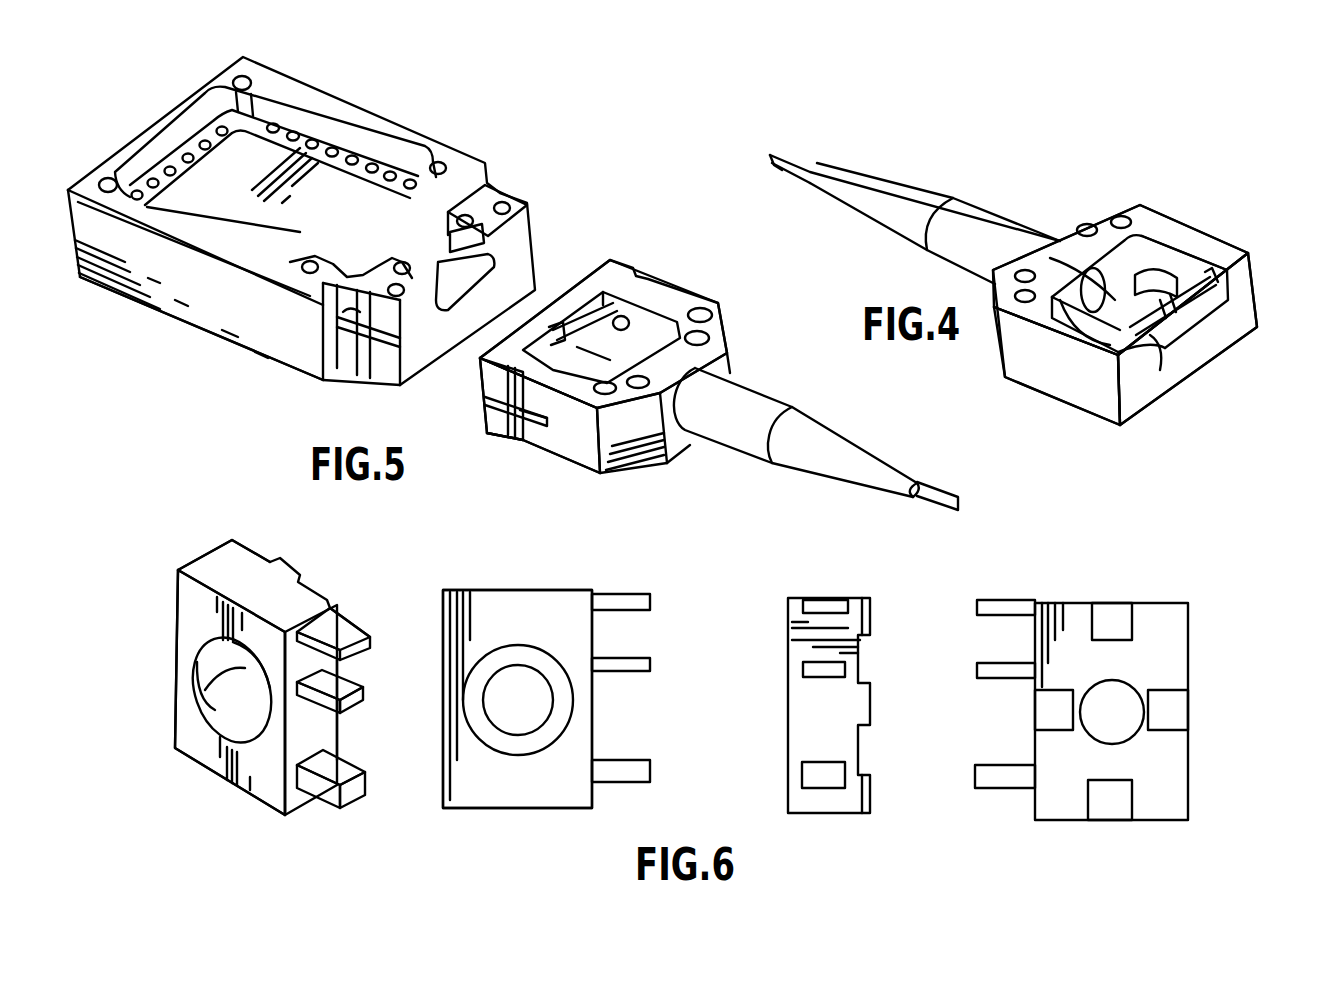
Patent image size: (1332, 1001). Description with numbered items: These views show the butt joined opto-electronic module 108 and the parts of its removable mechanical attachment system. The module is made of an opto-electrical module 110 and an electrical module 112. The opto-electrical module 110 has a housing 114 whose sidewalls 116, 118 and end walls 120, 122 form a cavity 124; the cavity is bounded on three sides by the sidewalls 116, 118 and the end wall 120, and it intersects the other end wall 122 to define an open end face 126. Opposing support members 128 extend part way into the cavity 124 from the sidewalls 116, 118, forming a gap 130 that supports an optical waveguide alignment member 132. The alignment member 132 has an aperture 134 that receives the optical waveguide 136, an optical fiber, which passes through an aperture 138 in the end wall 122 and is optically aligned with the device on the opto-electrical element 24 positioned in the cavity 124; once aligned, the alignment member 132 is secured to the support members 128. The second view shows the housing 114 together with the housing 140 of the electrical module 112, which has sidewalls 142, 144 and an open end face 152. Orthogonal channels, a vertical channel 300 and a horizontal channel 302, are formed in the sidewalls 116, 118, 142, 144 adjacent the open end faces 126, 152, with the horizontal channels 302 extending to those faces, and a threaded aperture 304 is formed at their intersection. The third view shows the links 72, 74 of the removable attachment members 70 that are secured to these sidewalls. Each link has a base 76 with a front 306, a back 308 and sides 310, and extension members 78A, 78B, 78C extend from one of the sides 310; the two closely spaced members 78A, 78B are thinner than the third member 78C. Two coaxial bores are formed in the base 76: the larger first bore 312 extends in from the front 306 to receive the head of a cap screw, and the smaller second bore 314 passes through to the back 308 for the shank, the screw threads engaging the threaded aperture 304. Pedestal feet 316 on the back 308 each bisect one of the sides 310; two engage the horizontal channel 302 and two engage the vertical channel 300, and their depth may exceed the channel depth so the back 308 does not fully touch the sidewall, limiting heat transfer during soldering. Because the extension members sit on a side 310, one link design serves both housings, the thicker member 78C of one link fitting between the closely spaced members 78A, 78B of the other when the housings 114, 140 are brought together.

In FIG. 4, the opto-electrical element 24 is at (1180, 330).
In FIG. 6, the removable attachment members 70 is at (681, 688).
In FIG. 6, the link 72 is at (215, 778).
In FIG. 6, the link 74 is at (815, 705).
In FIG. 6, the base 76 is at (178, 600).
In FIG. 6, the extension member 78A is at (360, 640).
In FIG. 6, the extension member 78B is at (365, 690).
In FIG. 6, the extension member 78C is at (365, 780).
In FIG. 5, the opto-electronic module 108 is at (605, 190).
In FIG. 5, the opto-electrical module 110 is at (719, 379).
In FIG. 5, the electrical module 112 is at (460, 118).
In FIG. 5, the housing 114 is at (632, 470).
In FIG. 4, the housing 114 is at (1072, 420).
In FIG. 5, the sidewall 116 is at (660, 270).
In FIG. 4, the sidewall 116 is at (1040, 375).
In FIG. 5, the sidewall 118 is at (577, 450).
In FIG. 4, the sidewall 118 is at (1235, 250).
In FIG. 4, the end wall 120 is at (1098, 215).
In FIG. 4, the end wall 122 is at (1230, 340).
In FIG. 4, the cavity 124 is at (1165, 262).
In FIG. 5, the open end face 126 is at (585, 310).
In FIG. 4, the open end face 126 is at (1180, 355).
In FIG. 4, the support members 128 is at (1225, 310).
In FIG. 4, the gap 130 is at (1195, 245).
In FIG. 4, the optical waveguide alignment member 132 is at (1105, 333).
In FIG. 4, the aperture 134 is at (1110, 283).
In FIG. 4, the optical waveguide 136 is at (1080, 320).
In FIG. 4, the aperture 138 is at (1060, 228).
In FIG. 5, the housing 140 is at (220, 327).
In FIG. 5, the sidewall 142 is at (118, 290).
In FIG. 5, the sidewall 144 is at (365, 105).
In FIG. 5, the open end face 152 is at (520, 220).
In FIG. 5, the vertical channel 300 is at (365, 355).
In FIG. 5, the horizontal channel 302 is at (392, 360).
In FIG. 5, the threaded aperture 304 is at (350, 331).
In FIG. 6, the front 306 is at (185, 730).
In FIG. 6, the back 308 is at (262, 565).
In FIG. 6, the sides 310 is at (215, 545).
In FIG. 6, the first bore 312 is at (213, 697).
In FIG. 6, the second bore 314 is at (250, 677).
In FIG. 6, the pedestal feet 316 is at (1112, 622).